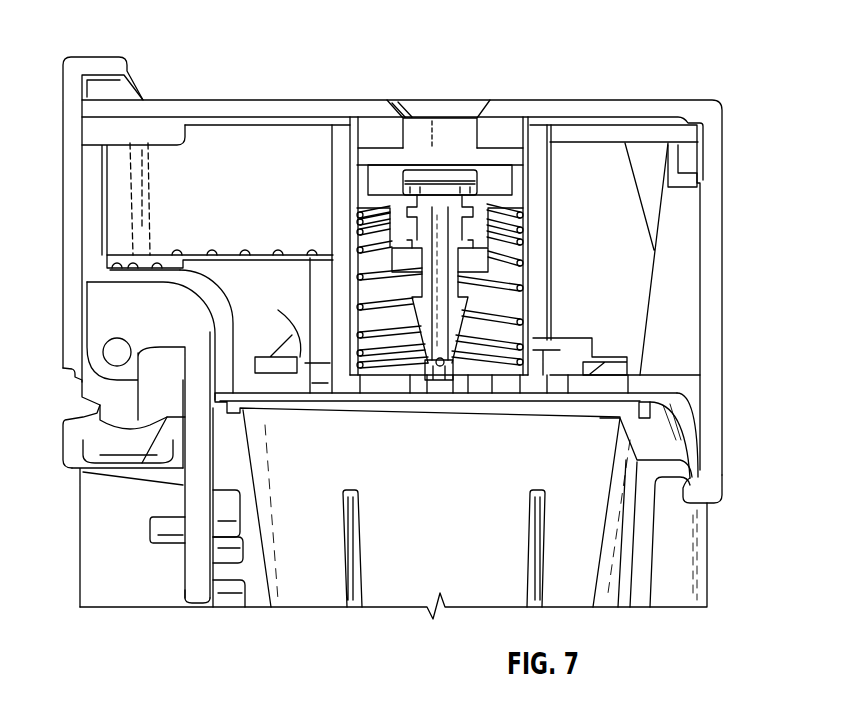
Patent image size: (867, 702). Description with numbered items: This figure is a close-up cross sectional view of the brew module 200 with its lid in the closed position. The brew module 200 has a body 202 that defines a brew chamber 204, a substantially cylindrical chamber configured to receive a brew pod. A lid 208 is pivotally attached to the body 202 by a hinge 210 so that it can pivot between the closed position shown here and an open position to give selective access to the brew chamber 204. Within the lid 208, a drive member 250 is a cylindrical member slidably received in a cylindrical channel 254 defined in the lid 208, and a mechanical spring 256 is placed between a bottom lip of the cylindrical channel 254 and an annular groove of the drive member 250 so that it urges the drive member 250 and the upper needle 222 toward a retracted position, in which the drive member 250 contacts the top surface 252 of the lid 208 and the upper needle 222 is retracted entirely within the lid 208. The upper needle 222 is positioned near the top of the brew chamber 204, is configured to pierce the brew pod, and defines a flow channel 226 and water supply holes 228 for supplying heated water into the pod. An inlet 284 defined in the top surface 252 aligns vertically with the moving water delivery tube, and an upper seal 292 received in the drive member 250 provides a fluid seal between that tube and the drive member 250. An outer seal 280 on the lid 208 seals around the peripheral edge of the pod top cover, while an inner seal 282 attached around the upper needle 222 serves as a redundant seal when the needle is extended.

The brew module 200 is at (772, 78).
The body 202 is at (100, 562).
The brew chamber 204 is at (463, 546).
The lid 208 is at (222, 110).
The hinge 210 is at (117, 353).
The upper needle 222 is at (423, 313).
The flow channel 226 is at (444, 316).
The water supply holes 228 is at (435, 384).
The drive member 250 is at (517, 192).
The top surface 252 is at (632, 92).
The cylindrical channel 254 is at (353, 152).
The mechanical spring 256 is at (522, 293).
The outer seal 280 is at (640, 400).
The inner seal 282 is at (470, 263).
The inlet 284 is at (473, 98).
The upper seal 292 is at (393, 178).